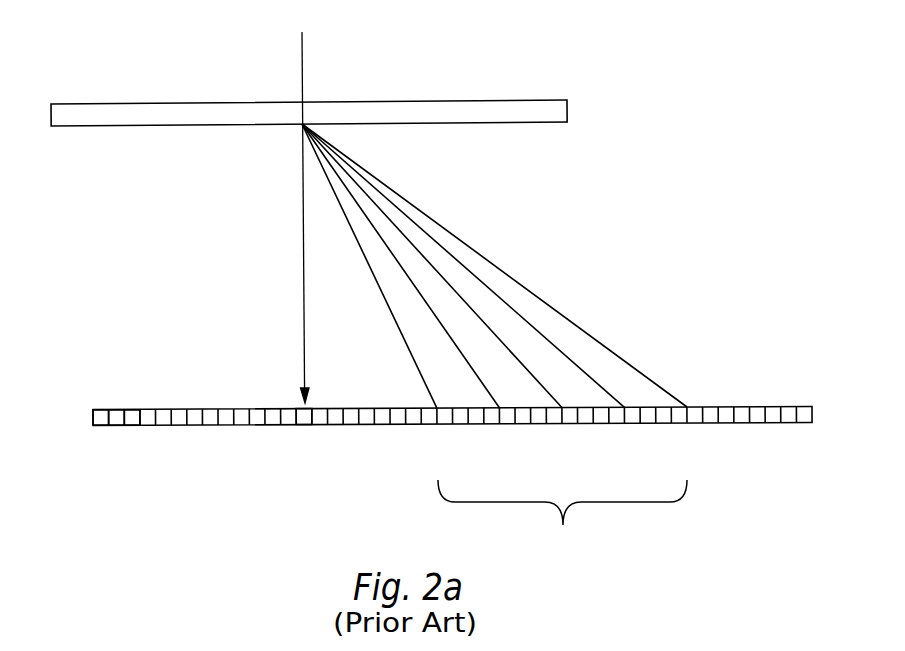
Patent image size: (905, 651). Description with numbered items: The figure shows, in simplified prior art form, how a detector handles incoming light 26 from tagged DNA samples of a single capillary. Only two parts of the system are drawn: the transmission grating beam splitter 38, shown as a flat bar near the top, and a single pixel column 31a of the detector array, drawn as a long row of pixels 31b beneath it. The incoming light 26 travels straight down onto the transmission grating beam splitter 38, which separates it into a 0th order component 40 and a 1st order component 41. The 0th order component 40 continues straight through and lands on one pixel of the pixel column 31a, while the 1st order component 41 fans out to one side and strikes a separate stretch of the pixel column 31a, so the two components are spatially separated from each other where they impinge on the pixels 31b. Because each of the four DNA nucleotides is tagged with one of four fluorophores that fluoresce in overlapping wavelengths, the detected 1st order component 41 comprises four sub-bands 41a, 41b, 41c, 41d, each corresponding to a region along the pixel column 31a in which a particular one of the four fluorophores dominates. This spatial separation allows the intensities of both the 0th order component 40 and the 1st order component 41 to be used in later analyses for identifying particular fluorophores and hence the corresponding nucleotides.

The incoming light 26 is at (299, 201).
The transmission grating beam splitter 38 is at (555, 112).
The pixel column 31a is at (806, 399).
The pixels 31b is at (133, 426).
The 0th order component 40 is at (302, 425).
The 1st order component 41 is at (562, 520).
The first sub-band 41a is at (499, 428).
The second sub-band 41b is at (500, 428).
The third sub-band 41c is at (563, 428).
The fourth sub-band 41d is at (625, 428).